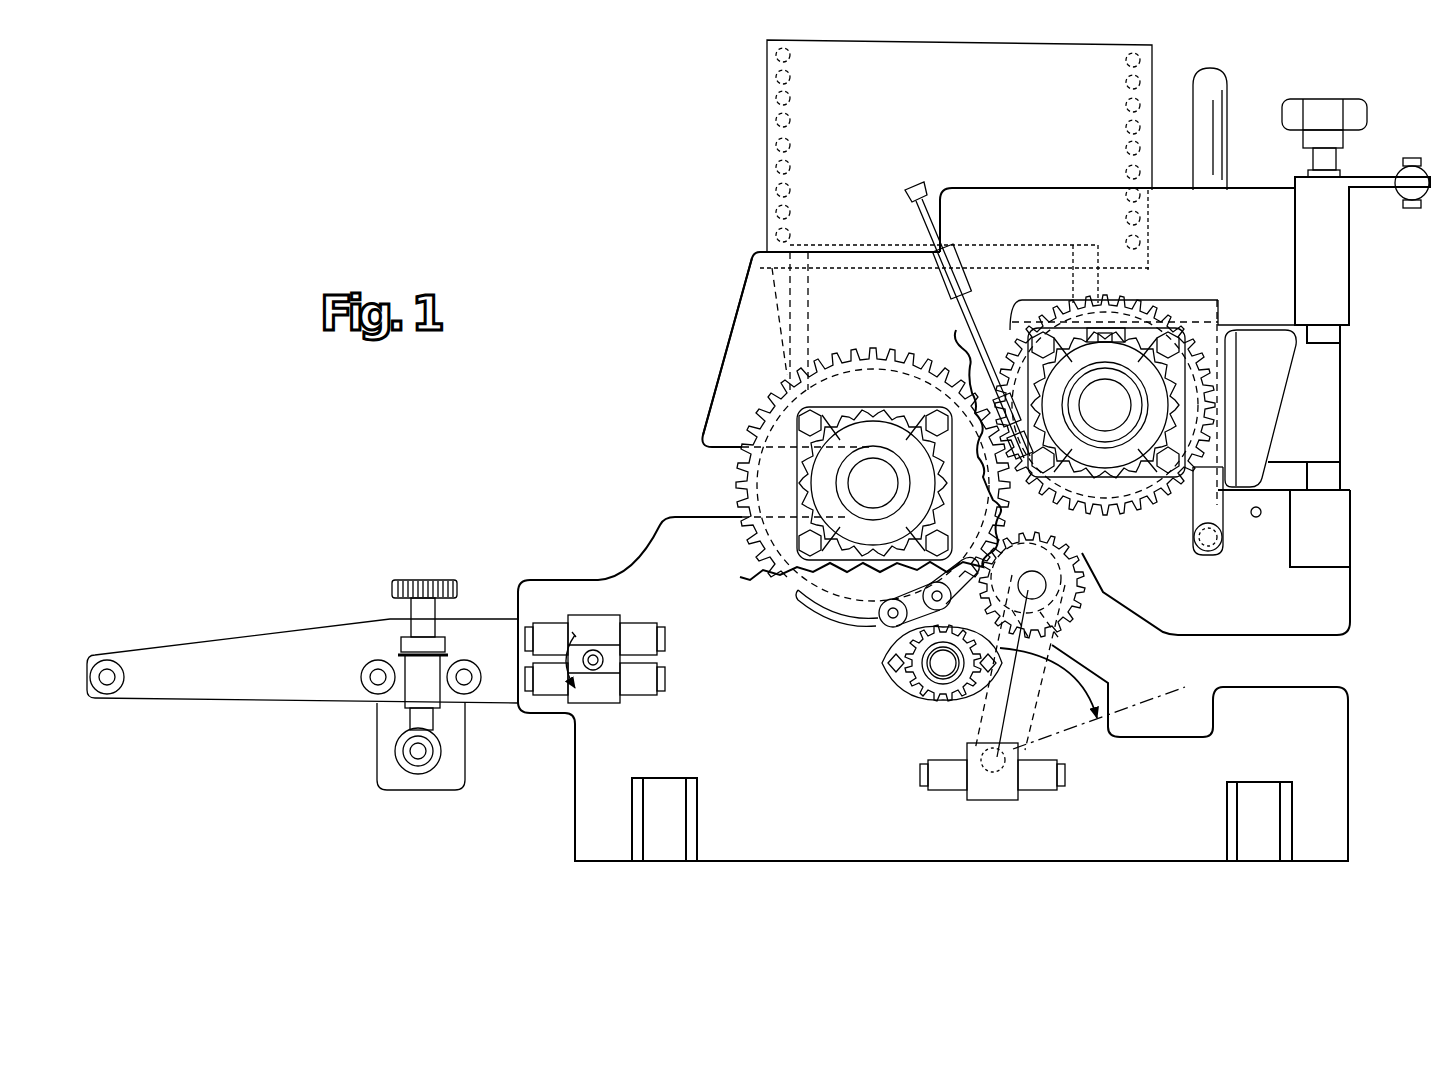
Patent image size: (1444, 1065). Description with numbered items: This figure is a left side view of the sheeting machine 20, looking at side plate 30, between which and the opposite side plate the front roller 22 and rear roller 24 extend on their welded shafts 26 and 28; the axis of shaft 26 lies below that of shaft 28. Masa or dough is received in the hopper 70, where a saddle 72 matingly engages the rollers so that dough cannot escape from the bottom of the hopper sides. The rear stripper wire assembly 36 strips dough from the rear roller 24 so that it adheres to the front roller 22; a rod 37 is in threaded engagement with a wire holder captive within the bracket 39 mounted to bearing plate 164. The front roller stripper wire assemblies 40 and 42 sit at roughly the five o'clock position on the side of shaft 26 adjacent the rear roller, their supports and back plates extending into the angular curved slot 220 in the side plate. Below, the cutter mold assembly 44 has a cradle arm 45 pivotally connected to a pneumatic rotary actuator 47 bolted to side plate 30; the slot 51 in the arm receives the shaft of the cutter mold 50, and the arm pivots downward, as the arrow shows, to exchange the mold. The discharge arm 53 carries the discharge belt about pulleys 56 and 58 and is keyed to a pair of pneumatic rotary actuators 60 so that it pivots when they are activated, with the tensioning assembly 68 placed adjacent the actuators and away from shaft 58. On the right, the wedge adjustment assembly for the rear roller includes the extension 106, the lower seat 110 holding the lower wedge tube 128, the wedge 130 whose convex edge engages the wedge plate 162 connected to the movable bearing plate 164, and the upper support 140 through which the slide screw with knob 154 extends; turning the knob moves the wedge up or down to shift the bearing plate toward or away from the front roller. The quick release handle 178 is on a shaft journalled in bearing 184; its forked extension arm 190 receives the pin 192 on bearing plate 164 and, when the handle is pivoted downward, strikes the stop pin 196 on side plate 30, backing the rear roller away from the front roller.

The sheeting machine 20 is at (695, 300).
The front roller 22 is at (882, 350).
The rear roller 24 is at (1130, 305).
The shaft 26 is at (874, 483).
The shaft 28 is at (1106, 403).
The side plate 30 is at (742, 347).
The rear stripper wire assembly 36 is at (968, 228).
The rod 37 is at (956, 300).
The bracket 39 is at (961, 352).
The stripper wire assembly 40 is at (912, 580).
The stripper wire assembly 42 is at (882, 626).
The cutter mold assembly 44 is at (968, 717).
The cradle arm 45 is at (1080, 657).
The pneumatic rotary actuator 47 is at (995, 795).
The cutter mold 50 is at (1083, 553).
The slot 51 is at (1062, 630).
The discharge arm 53 is at (250, 630).
The pulley 56 is at (920, 688).
The pulley 58 is at (107, 690).
The pneumatic rotary actuator 60 is at (665, 676).
The tensioning assembly 68 is at (385, 606).
The hopper 70 is at (772, 97).
The saddle 72 is at (850, 242).
The extension 106 is at (1392, 182).
The lower seat 110 is at (1335, 533).
The lower wedge tube 128 is at (1330, 472).
The wedge 130 is at (1325, 405).
The upper support 140 is at (1335, 268).
The knob 154 is at (1330, 98).
The wedge plate 162 is at (1260, 408).
The movable bearing plate 164 is at (1210, 312).
The handle 178 is at (1225, 72).
The bearing 184 is at (1226, 550).
The forked extension arm 190 is at (1198, 500).
The pin 192 is at (1222, 446).
The stop pin 196 is at (1259, 517).
The angular curved slot 220 is at (805, 600).